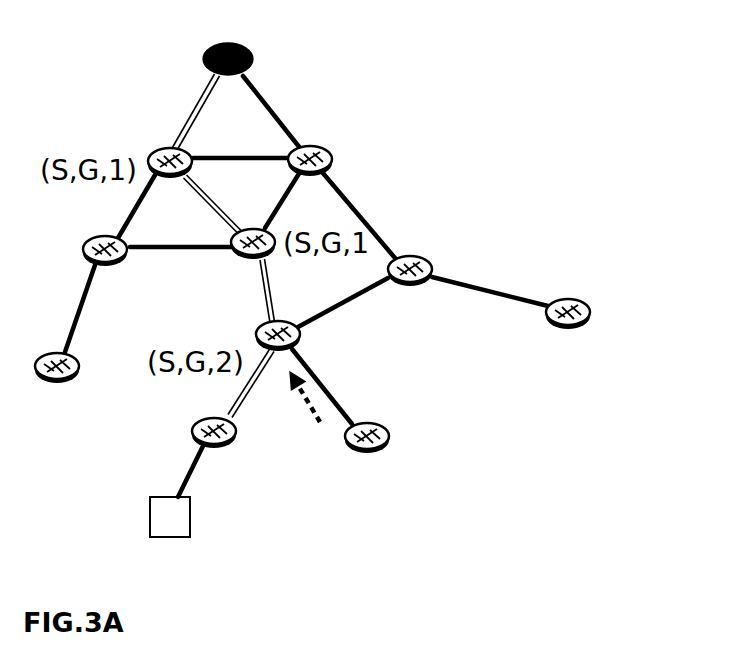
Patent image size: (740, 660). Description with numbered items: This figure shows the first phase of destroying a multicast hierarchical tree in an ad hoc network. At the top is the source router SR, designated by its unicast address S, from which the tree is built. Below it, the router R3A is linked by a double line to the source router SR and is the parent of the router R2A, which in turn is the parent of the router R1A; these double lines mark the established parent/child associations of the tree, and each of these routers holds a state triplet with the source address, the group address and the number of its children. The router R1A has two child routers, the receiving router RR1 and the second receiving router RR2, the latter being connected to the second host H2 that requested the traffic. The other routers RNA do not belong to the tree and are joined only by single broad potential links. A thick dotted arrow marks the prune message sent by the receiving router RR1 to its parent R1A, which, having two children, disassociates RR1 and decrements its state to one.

The source router SR is at (184, 48).
The router R3A is at (135, 137).
The router R2A is at (226, 266).
The router R1A is at (319, 337).
The routers RNA is at (540, 269).
The second receiving router RR2 is at (165, 436).
The receiving router RR1 is at (406, 437).
The second host H2 is at (190, 510).